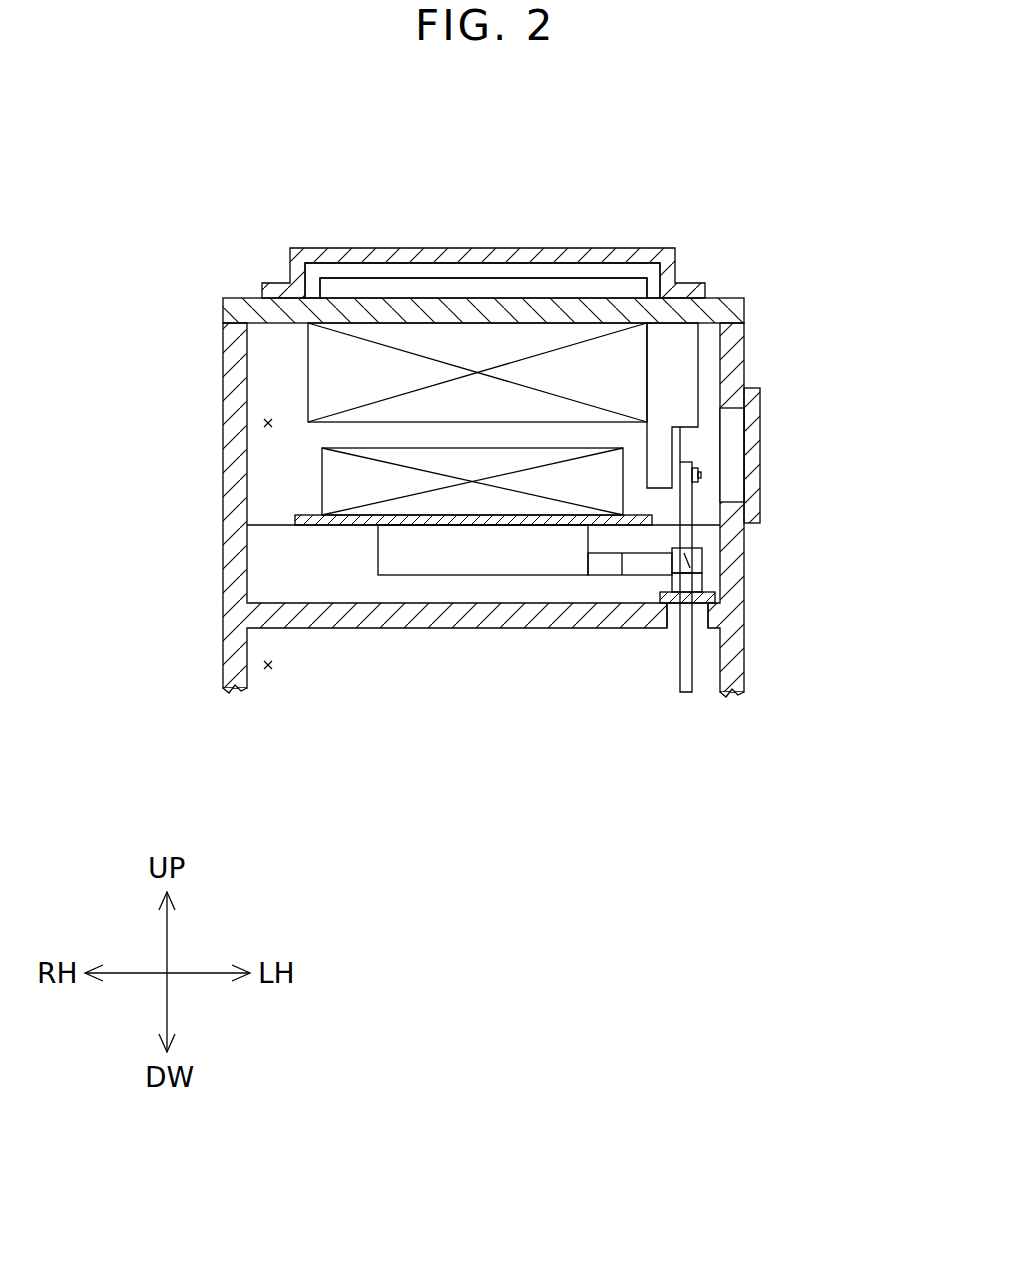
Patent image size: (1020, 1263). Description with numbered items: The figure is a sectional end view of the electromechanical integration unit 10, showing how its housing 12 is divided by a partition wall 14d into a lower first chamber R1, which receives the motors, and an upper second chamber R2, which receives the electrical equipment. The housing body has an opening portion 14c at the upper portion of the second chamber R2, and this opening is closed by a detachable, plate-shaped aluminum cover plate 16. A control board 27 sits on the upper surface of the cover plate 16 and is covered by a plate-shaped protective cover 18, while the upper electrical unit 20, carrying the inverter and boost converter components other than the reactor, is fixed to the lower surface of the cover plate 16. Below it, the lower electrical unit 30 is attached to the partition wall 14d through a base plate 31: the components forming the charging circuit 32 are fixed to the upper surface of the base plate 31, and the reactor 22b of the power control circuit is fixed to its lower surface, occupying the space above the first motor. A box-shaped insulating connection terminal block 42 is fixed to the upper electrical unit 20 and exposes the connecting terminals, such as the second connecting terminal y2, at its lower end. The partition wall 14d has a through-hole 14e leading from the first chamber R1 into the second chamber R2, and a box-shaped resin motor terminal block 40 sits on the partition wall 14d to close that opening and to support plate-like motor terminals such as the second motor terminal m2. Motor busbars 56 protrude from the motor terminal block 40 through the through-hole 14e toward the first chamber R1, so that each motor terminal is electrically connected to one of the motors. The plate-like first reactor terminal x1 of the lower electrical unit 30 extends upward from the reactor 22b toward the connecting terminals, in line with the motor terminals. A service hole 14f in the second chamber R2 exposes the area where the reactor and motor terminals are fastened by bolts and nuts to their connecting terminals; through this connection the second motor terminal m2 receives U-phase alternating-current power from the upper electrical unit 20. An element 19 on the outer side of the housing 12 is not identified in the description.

The electromechanical integration unit 10 is at (810, 185).
The housing 12 is at (157, 277).
The opening portion 14c is at (263, 310).
The partition wall 14d is at (288, 602).
The through-hole 14e is at (697, 630).
The service hole 14f is at (740, 490).
The cover plate 16 is at (432, 295).
The protective cover 18 is at (628, 258).
The protrusion 19 is at (760, 413).
The upper electrical unit 20 is at (308, 373).
The reactor 22b is at (472, 565).
The control board 27 is at (532, 283).
The lower electrical unit 30 is at (365, 562).
The base plate 31 is at (300, 512).
The charging circuit 32 is at (320, 482).
The motor terminal block 40 is at (703, 552).
The connection terminal block 42 is at (688, 354).
The motor busbars 56 is at (680, 668).
The first chamber R1 is at (262, 665).
The second chamber R2 is at (262, 423).
The first reactor terminal x1 is at (690, 567).
The second connecting terminal y2 is at (686, 448).
The second motor terminal m2 is at (693, 512).